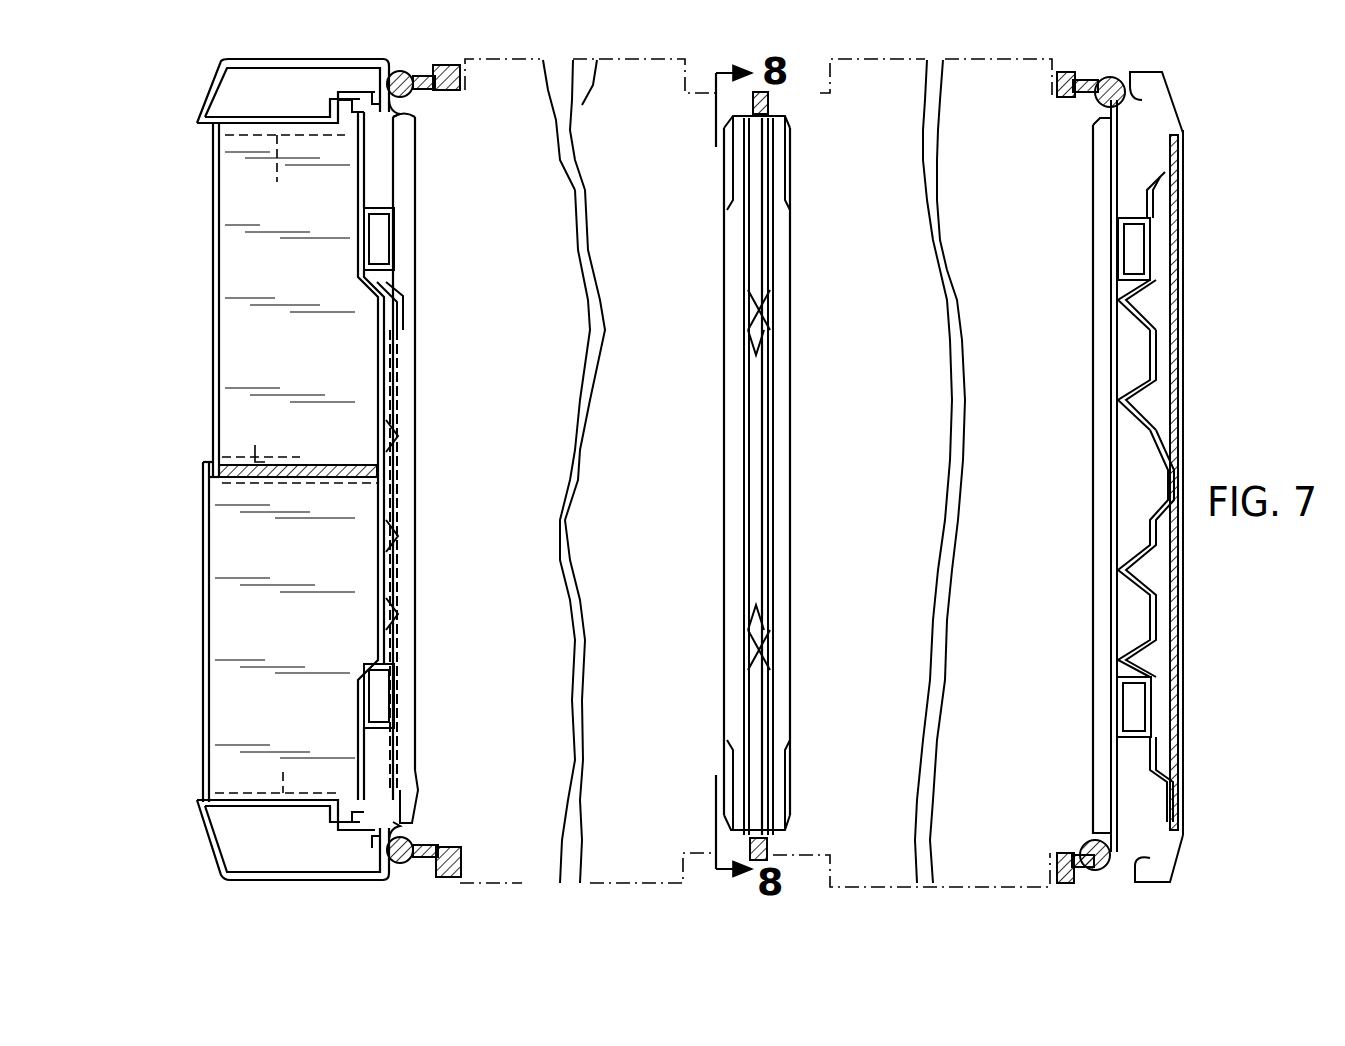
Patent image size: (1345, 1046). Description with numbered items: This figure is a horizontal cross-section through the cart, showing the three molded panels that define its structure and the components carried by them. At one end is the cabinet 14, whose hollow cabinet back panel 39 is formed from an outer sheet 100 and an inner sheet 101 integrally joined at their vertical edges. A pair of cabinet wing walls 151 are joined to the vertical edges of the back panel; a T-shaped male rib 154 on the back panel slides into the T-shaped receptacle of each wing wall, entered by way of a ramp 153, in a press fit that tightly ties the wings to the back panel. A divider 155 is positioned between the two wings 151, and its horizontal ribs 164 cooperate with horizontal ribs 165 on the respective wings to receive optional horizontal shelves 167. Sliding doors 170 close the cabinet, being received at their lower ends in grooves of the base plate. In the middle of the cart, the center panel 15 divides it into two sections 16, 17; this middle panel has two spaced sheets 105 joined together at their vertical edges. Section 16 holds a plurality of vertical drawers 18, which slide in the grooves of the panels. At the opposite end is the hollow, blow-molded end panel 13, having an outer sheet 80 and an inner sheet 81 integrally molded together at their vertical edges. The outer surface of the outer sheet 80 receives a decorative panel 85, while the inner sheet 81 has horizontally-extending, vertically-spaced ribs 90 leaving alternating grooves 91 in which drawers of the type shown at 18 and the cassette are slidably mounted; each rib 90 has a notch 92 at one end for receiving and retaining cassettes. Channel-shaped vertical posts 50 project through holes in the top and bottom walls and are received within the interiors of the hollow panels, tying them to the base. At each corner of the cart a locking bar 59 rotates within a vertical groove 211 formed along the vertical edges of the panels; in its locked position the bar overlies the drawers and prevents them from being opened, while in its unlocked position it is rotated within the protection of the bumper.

The end panel 13 is at (1160, 326).
The cabinet 14 is at (185, 94).
The center panel 15 is at (800, 420).
The section 16 is at (612, 487).
The section 17 is at (935, 499).
The vertical drawers 18 is at (575, 108).
The cabinet back panel 39 is at (405, 306).
The vertical posts 50 is at (370, 235).
The locking bar 59 is at (462, 78).
The outer sheet 80 is at (1152, 440).
The inner sheet 81 is at (1113, 348).
The decorative panel 85 is at (1180, 378).
The ribs 90 is at (410, 412).
The grooves 91 is at (398, 366).
The notch 92 is at (420, 772).
The outer sheet 100 is at (385, 574).
The inner sheet 101 is at (398, 510).
The spaced sheets 105 is at (783, 370).
The cabinet wing walls 151 is at (230, 75).
The ramp 153 is at (338, 101).
The T-shaped male rib 154 is at (368, 86).
The divider 155 is at (305, 478).
The horizontal ribs 164 is at (270, 445).
The horizontal ribs 165 is at (282, 464).
The horizontal shelves 167 is at (298, 345).
The sliding doors 170 is at (205, 466).
The vertical grooves 211 is at (410, 94).